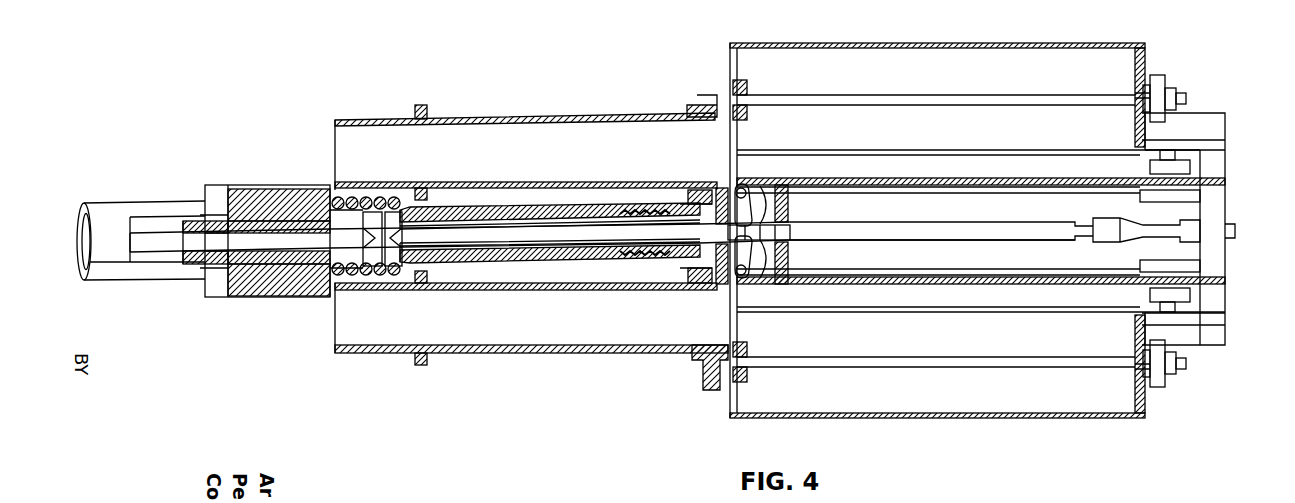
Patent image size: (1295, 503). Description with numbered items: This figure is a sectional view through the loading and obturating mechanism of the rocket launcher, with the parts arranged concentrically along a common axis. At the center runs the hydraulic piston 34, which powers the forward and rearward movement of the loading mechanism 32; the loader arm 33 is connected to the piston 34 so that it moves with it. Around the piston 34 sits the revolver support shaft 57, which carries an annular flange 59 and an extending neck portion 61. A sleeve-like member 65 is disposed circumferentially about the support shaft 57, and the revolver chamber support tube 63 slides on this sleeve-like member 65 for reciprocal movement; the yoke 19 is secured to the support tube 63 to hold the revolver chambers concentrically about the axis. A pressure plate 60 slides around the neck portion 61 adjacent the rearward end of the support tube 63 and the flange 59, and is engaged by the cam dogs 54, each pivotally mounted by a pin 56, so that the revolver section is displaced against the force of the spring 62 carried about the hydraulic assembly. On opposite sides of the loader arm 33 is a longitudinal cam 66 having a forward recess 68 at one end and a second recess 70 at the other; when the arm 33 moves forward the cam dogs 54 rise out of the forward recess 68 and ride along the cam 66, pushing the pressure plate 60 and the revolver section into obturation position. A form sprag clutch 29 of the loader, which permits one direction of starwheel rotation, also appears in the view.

The yoke 19 is at (424, 107).
The form sprag clutch 29 is at (1163, 387).
The loading mechanism 32 is at (1192, 292).
The loader arm 33 is at (905, 236).
The hydraulic piston 34 is at (534, 248).
The cam dog 54 is at (758, 192).
The pin 56 is at (724, 290).
The revolver support shaft 57 is at (576, 266).
The annular flange 59 is at (690, 190).
The pressure plate 60 is at (722, 188).
The neck portion 61 is at (781, 210).
The spring 62 is at (387, 197).
The revolver chamber support tube 63 is at (434, 275).
The sleeve-like member 65 is at (505, 207).
The longitudinal cam 66 is at (943, 228).
The forward recess 68 is at (786, 232).
The recess 70 is at (1084, 237).